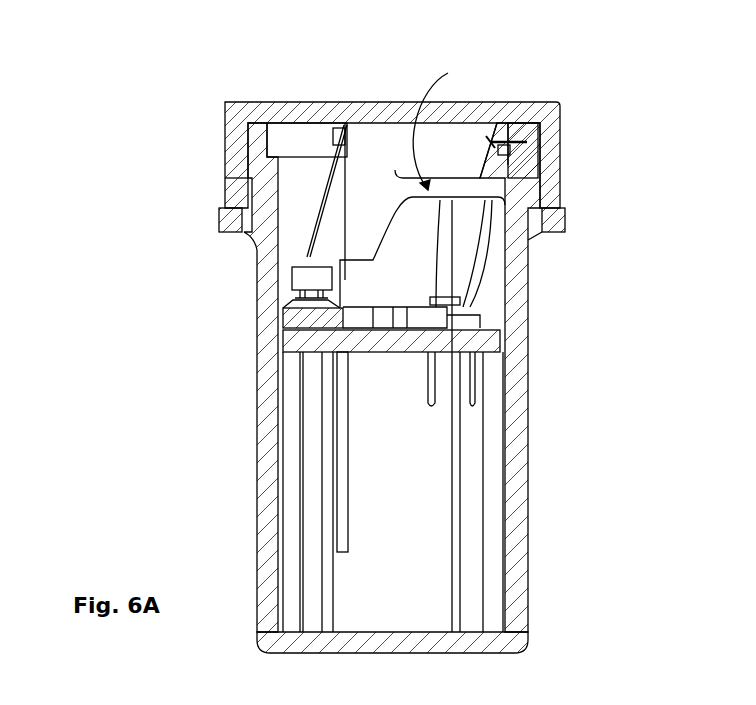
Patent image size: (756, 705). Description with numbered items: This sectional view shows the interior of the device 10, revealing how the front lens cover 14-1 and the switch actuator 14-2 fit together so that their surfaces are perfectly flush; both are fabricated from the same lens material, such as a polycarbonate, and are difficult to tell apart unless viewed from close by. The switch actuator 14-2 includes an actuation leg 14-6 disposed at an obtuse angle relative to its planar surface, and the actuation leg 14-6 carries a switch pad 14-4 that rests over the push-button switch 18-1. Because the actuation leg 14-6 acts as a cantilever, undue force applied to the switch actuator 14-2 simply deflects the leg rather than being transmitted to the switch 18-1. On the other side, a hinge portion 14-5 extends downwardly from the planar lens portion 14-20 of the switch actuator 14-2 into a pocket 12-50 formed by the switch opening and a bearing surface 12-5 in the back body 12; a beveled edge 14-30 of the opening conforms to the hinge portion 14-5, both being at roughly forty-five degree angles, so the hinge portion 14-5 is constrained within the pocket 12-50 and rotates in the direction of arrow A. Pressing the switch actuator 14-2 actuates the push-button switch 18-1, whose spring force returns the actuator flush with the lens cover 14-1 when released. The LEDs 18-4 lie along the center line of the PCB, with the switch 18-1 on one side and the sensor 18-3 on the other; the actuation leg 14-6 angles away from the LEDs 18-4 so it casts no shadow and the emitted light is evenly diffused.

The device 10 is at (566, 573).
The back body 12 is at (270, 498).
The bearing surface 12-5 is at (520, 148).
The pocket 12-50 is at (542, 137).
The lens cover 14-1 is at (248, 112).
The switch actuator 14-2 is at (415, 102).
The switch pad 14-4 is at (305, 278).
The hinge portion 14-5 is at (495, 120).
The actuation leg 14-6 is at (335, 215).
The planar lens portion 14-20 is at (435, 113).
The beveled edge 14-30 is at (503, 120).
The push-button switch 18-1 is at (330, 299).
The sensor 18-3 is at (450, 313).
The LEDs 18-4 is at (392, 323).